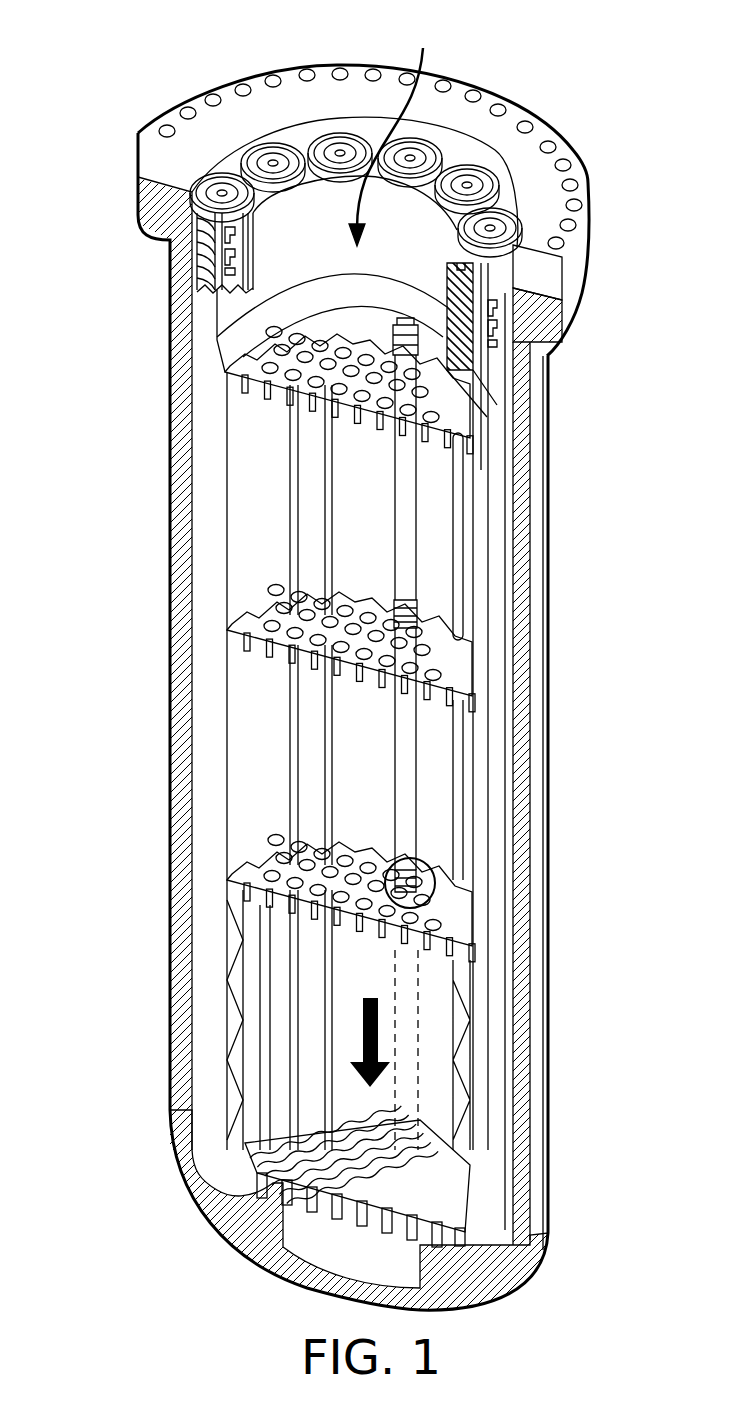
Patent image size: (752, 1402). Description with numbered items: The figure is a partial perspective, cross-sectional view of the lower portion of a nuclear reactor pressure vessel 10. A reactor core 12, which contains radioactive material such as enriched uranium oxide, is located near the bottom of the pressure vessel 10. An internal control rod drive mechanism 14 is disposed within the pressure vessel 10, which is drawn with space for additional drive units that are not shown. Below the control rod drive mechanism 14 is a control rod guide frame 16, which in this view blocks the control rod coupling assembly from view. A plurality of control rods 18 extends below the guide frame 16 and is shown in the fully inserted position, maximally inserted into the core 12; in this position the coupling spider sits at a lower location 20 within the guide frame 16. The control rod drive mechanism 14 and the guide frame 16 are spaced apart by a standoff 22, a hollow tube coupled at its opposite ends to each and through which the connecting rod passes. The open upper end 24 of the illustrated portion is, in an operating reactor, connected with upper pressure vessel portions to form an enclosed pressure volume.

The nuclear reactor pressure vessel 10 is at (172, 478).
The reactor core 12 is at (206, 867).
The control rod drive mechanism 14 is at (420, 513).
The control rod guide frame 16 is at (418, 788).
The control rods 18 is at (413, 1022).
The lower location 20 is at (435, 883).
The standoff 22 is at (417, 603).
The open upper end 24 is at (395, 125).